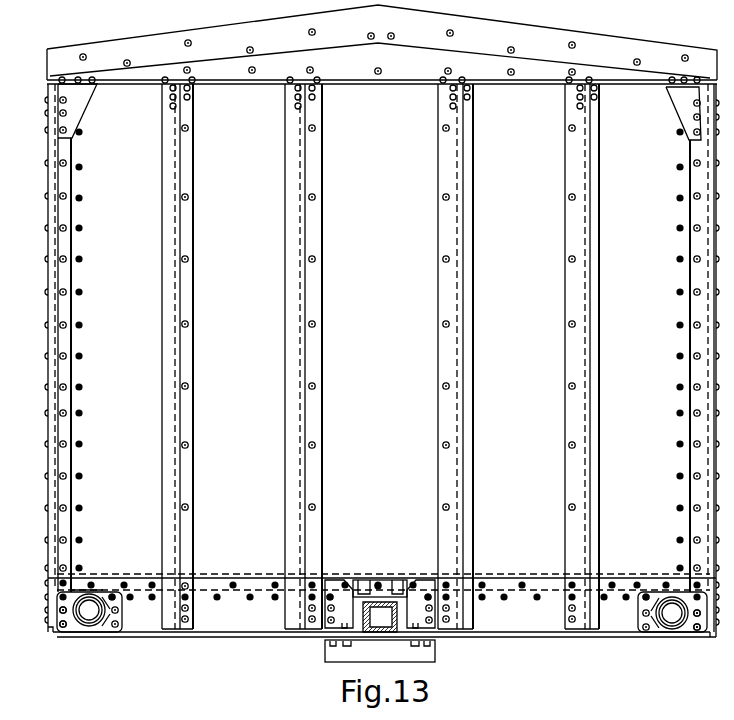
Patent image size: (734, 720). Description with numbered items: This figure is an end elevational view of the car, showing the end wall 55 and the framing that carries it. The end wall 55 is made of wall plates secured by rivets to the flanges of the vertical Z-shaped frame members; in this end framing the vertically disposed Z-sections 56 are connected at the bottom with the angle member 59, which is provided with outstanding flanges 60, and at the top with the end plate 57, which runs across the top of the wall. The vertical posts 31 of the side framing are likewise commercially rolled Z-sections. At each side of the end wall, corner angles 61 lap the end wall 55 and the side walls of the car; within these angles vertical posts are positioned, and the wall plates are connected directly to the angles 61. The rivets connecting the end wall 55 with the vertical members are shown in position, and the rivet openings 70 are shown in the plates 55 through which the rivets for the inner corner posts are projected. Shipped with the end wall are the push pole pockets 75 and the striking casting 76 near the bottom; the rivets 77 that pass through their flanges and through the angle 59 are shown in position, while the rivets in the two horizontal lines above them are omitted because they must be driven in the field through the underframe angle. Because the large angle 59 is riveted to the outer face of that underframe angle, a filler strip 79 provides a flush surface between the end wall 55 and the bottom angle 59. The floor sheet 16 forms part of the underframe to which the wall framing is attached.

The floor sheet 16 is at (27, 340).
The vertical post 31 is at (162, 213).
The end wall 55 is at (382, 197).
The vertically disposed Z-sections 56 is at (192, 372).
The end plate 57 is at (382, 42).
The angle member 59 is at (379, 606).
The outstanding flanges 60 is at (529, 634).
The corner angles 61 is at (67, 281).
The rivet openings 70 is at (82, 168).
The push pole pockets 75 is at (107, 632).
The striking casting 76 is at (345, 612).
The rivets 77 is at (120, 612).
The filler strip 79 is at (218, 580).